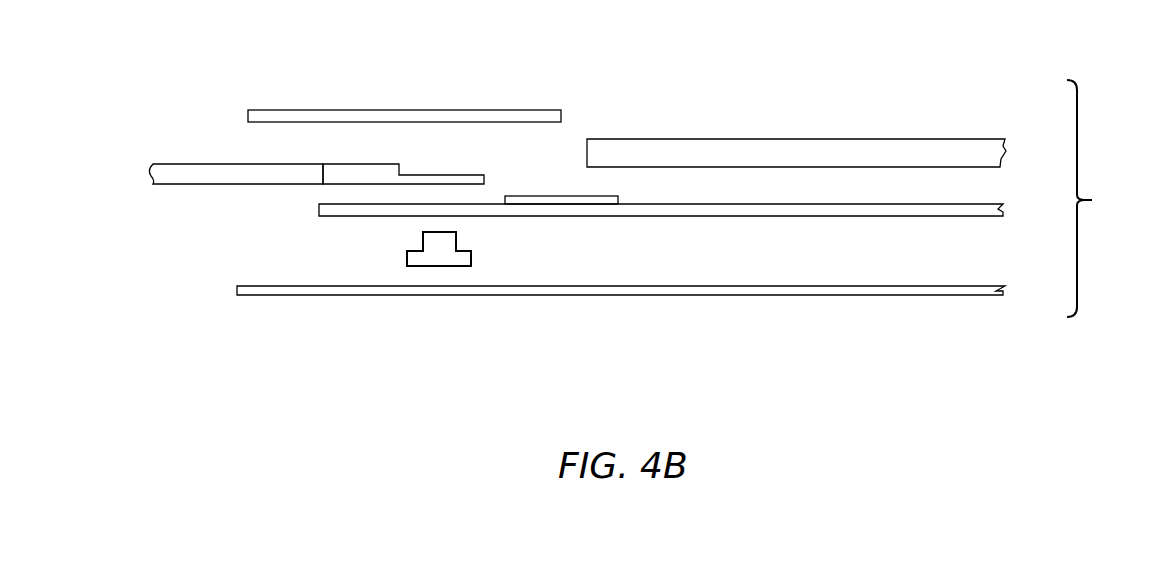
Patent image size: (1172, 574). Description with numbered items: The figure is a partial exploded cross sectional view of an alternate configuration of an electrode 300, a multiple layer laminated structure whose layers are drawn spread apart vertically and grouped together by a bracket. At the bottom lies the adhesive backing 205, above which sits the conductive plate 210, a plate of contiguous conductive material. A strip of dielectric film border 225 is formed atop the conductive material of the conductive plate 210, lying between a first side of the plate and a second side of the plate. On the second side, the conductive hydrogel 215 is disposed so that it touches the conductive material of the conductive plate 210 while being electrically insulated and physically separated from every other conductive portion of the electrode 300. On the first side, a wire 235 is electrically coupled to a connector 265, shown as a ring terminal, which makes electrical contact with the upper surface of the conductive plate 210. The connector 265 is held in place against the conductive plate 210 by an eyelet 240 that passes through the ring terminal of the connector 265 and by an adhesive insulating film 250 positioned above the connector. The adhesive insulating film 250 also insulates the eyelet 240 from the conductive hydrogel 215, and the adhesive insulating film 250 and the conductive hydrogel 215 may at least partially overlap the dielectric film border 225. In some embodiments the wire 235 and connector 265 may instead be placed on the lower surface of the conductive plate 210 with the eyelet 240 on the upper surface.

The adhesive backing 205 is at (402, 292).
The conductive plate 210 is at (333, 210).
The conductive hydrogel 215 is at (804, 162).
The dielectric film border 225 is at (547, 201).
The wire 235 is at (172, 173).
The eyelet 240 is at (424, 260).
The adhesive insulating film 250 is at (463, 116).
The connector 265 is at (348, 167).
The electrode 300 is at (1112, 198).